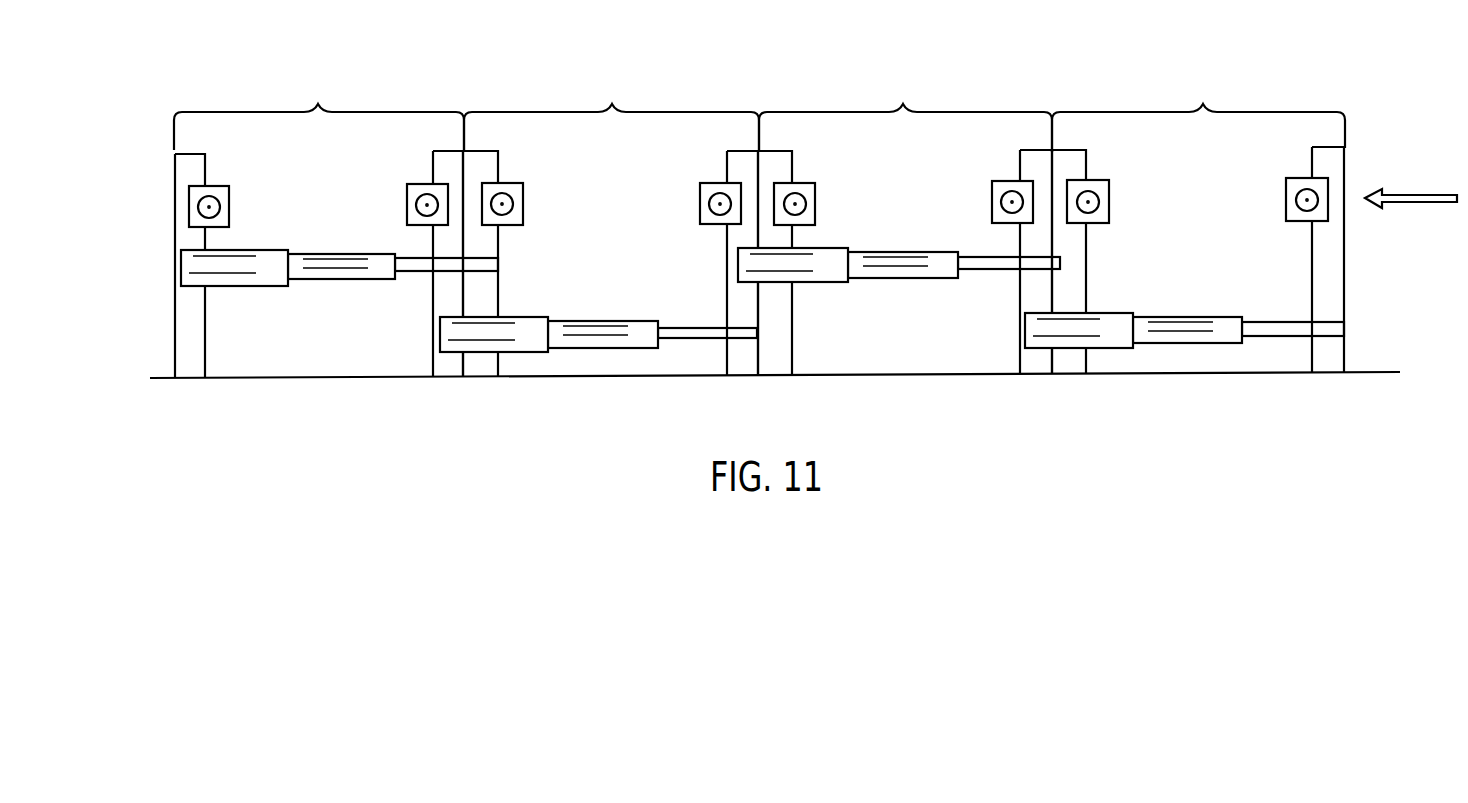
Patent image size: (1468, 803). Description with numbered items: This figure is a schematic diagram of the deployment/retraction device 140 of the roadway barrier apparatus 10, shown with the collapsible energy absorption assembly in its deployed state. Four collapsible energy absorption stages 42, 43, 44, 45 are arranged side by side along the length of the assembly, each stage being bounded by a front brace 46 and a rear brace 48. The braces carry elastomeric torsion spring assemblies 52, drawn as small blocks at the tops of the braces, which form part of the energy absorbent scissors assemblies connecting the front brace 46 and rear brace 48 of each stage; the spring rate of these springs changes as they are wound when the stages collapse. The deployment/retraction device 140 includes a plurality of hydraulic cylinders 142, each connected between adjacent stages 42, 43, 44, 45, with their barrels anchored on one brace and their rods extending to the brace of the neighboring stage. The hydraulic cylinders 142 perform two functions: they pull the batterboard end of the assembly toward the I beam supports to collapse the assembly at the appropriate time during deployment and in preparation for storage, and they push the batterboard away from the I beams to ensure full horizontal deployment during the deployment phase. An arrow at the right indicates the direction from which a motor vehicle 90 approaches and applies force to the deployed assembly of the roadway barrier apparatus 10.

The roadway barrier apparatus 10 is at (1356, 248).
The collapsible energy absorption stage 42 is at (1198, 113).
The collapsible energy absorption stage 43 is at (905, 112).
The collapsible energy absorption stage 44 is at (611, 113).
The collapsible energy absorption stage 45 is at (319, 114).
The front brace 46 is at (437, 160).
The rear brace 48 is at (180, 177).
The elastomeric torsion spring assembly 52 is at (225, 184).
The motor vehicle 90 is at (1440, 194).
The deployment/retraction device 140 is at (816, 85).
The hydraulic cylinder 142 is at (330, 277).